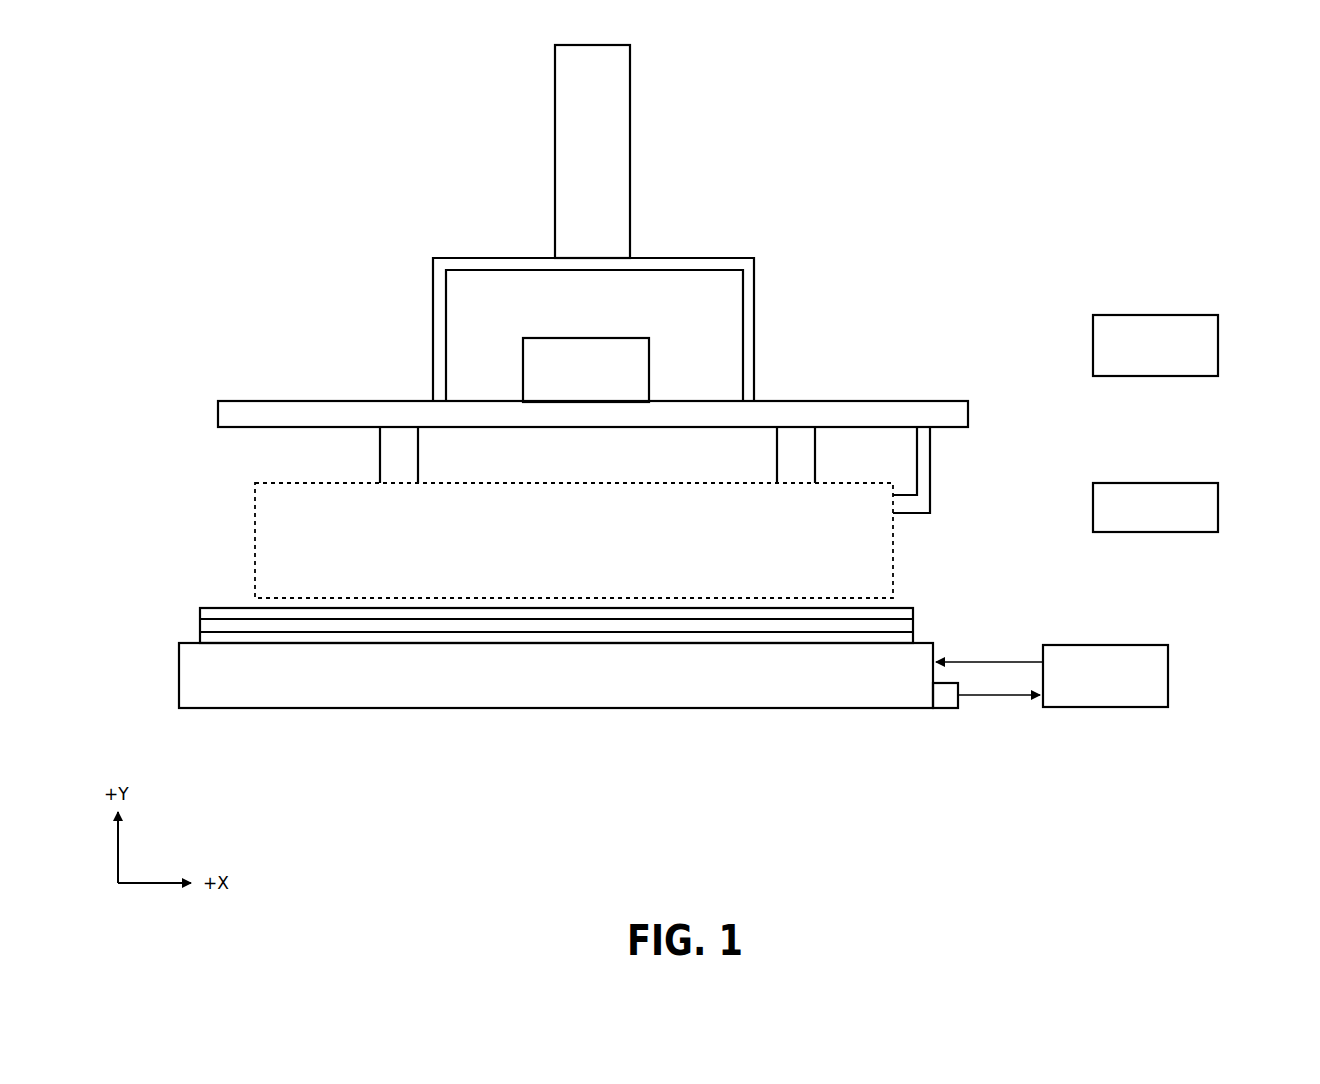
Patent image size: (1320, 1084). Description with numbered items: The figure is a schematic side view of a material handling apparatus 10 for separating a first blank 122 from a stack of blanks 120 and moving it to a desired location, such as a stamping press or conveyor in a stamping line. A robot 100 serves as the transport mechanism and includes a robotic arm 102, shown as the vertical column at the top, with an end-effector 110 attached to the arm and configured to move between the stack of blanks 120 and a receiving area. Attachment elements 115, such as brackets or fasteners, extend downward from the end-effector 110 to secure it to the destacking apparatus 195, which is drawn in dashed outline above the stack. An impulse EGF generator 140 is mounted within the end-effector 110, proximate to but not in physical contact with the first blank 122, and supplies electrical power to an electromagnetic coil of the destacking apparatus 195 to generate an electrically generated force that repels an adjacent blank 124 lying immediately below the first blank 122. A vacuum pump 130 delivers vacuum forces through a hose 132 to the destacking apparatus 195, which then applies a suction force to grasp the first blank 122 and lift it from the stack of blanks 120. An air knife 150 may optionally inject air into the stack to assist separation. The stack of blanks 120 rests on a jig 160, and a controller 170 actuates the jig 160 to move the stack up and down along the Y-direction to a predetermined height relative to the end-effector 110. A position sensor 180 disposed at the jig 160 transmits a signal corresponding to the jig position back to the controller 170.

The material handling apparatus 10 is at (940, 163).
The robot 100 is at (744, 181).
The robotic arm 102 is at (631, 149).
The end-effector 110 is at (755, 273).
The attachment elements 115 is at (419, 459).
The stack of blanks 120 is at (910, 596).
The first blank 122 is at (914, 613).
The adjacent blank 124 is at (914, 626).
The vacuum pump 130 is at (1219, 331).
The hose 132 is at (931, 462).
The impulse EGF generator 140 is at (604, 338).
The air knife 150 is at (1219, 494).
The jig 160 is at (818, 709).
The controller 170 is at (1169, 674).
The position sensor 180 is at (941, 709).
The destacking apparatus 195 is at (238, 536).